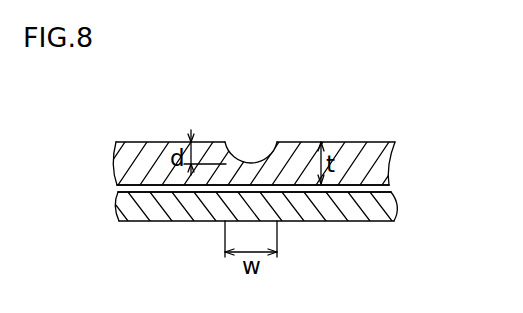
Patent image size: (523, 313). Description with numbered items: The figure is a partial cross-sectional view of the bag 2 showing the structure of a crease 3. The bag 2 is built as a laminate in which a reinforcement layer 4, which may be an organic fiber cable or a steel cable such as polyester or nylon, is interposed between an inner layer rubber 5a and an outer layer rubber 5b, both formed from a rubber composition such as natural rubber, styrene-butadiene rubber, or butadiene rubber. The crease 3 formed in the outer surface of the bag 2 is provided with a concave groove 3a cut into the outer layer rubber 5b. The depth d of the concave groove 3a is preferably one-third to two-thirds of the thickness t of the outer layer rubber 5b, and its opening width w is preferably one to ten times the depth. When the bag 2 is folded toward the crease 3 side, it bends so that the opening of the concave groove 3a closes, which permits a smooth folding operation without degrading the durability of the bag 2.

The bag 2 is at (172, 128).
The crease 3 is at (294, 118).
The concave groove 3a is at (248, 143).
The reinforcement layer 4 is at (343, 189).
The inner layer rubber 5a is at (172, 197).
The outer layer rubber 5b is at (364, 146).